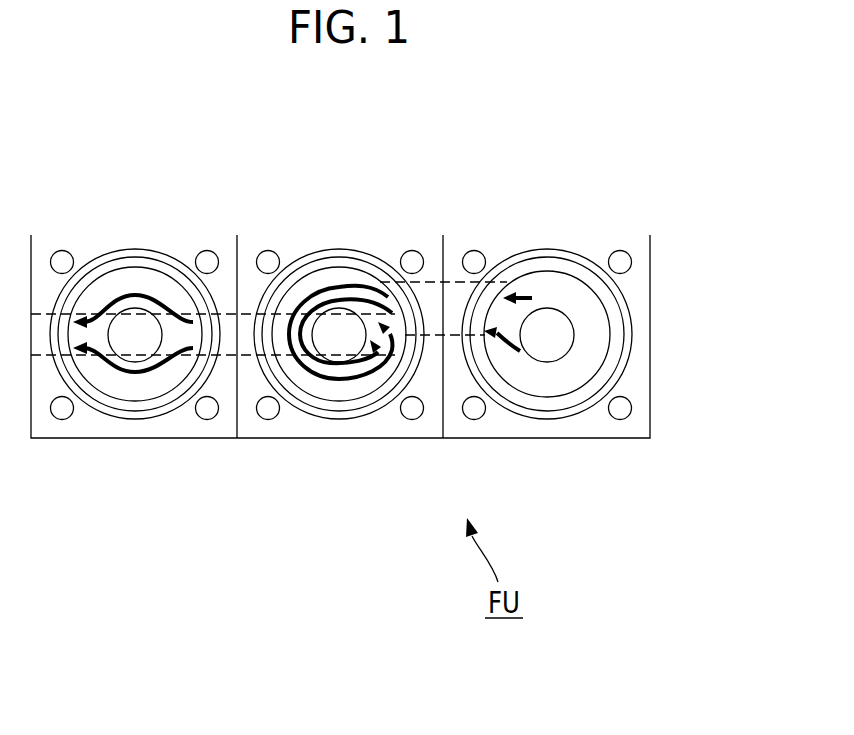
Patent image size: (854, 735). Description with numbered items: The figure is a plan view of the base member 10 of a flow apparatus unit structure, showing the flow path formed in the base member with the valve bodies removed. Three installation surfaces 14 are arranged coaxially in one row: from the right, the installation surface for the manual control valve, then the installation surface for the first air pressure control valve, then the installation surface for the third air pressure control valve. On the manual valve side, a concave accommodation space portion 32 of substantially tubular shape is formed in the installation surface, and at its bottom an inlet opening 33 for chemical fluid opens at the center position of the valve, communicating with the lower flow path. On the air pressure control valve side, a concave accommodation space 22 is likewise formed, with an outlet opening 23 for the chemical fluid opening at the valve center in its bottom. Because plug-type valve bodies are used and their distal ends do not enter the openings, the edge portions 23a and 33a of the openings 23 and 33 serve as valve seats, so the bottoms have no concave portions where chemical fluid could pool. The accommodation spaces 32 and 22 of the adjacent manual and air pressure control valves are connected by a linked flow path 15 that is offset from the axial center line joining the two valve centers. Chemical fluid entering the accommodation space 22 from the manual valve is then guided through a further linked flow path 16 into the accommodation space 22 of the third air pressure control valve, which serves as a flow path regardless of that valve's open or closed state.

The base member 10 is at (651, 378).
The installation surface 14 is at (182, 428).
The linked flow path 15 is at (428, 282).
The linked flow path 16 is at (236, 314).
The accommodation space 22 is at (117, 280).
The outlet opening 23 is at (128, 352).
The edge portion 23a is at (136, 316).
The accommodation space portion 32 is at (595, 317).
The inlet opening 33 is at (548, 322).
The edge portion 33a is at (530, 355).